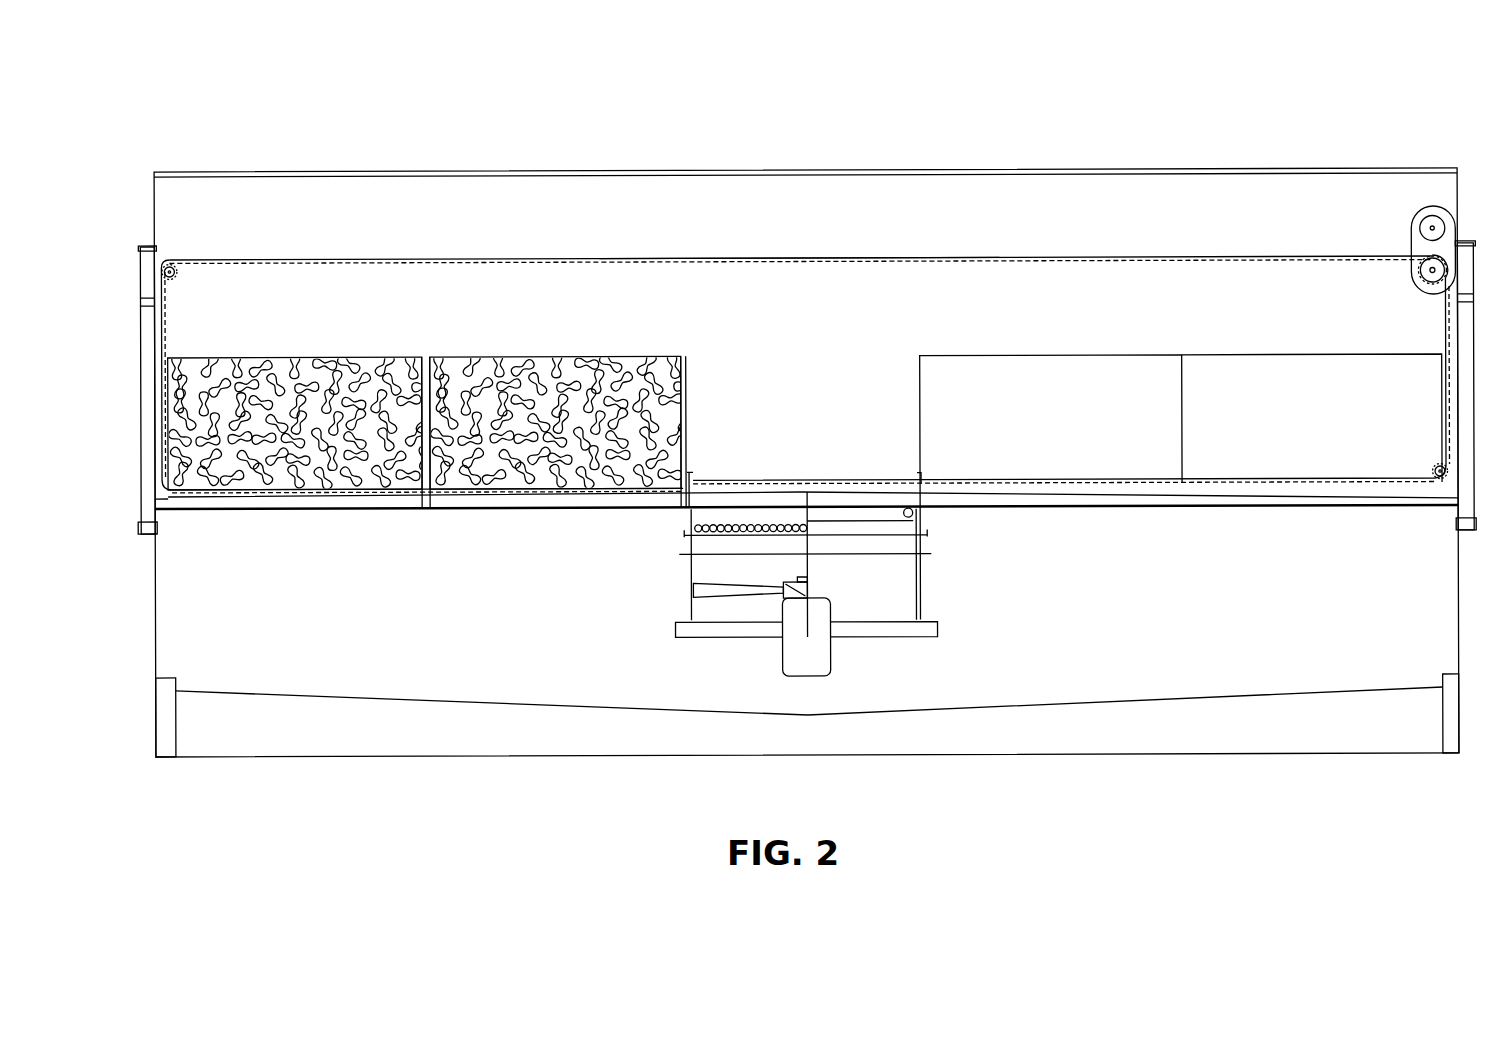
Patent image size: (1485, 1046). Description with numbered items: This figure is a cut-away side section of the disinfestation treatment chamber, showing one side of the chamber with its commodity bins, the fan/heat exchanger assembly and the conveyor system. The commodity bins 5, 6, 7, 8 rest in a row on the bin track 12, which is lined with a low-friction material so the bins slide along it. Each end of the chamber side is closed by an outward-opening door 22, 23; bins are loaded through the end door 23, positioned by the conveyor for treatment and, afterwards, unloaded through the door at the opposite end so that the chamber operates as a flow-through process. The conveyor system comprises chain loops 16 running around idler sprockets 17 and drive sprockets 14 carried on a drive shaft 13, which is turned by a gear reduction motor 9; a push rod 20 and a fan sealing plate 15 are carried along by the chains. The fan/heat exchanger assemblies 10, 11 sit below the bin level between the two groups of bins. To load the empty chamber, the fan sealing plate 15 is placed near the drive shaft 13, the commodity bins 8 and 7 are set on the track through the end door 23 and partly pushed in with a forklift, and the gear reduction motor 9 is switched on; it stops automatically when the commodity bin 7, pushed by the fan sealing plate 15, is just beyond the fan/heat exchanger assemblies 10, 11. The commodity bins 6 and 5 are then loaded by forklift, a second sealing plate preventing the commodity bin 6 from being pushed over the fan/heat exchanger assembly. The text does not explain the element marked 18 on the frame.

The commodity bin 5 is at (312, 372).
The commodity bin 6 is at (567, 375).
The commodity bin 7 is at (1057, 434).
The commodity bin 8 is at (1328, 434).
The gear reduction motor 9 is at (1414, 224).
The fan/heat exchanger assembly 10 is at (882, 601).
The fan/heat exchanger assembly 11 is at (737, 530).
The bin track 12 is at (310, 510).
The drive shaft 13 is at (1432, 272).
The drive sprocket 14 is at (1428, 287).
The fan sealing plate 15 is at (690, 478).
The chain loop 16 is at (440, 258).
The idler sprocket 17 is at (177, 276).
The support rail 18 is at (162, 497).
The push rod 20 is at (708, 258).
The door 22 is at (1465, 243).
The door 23 is at (146, 245).